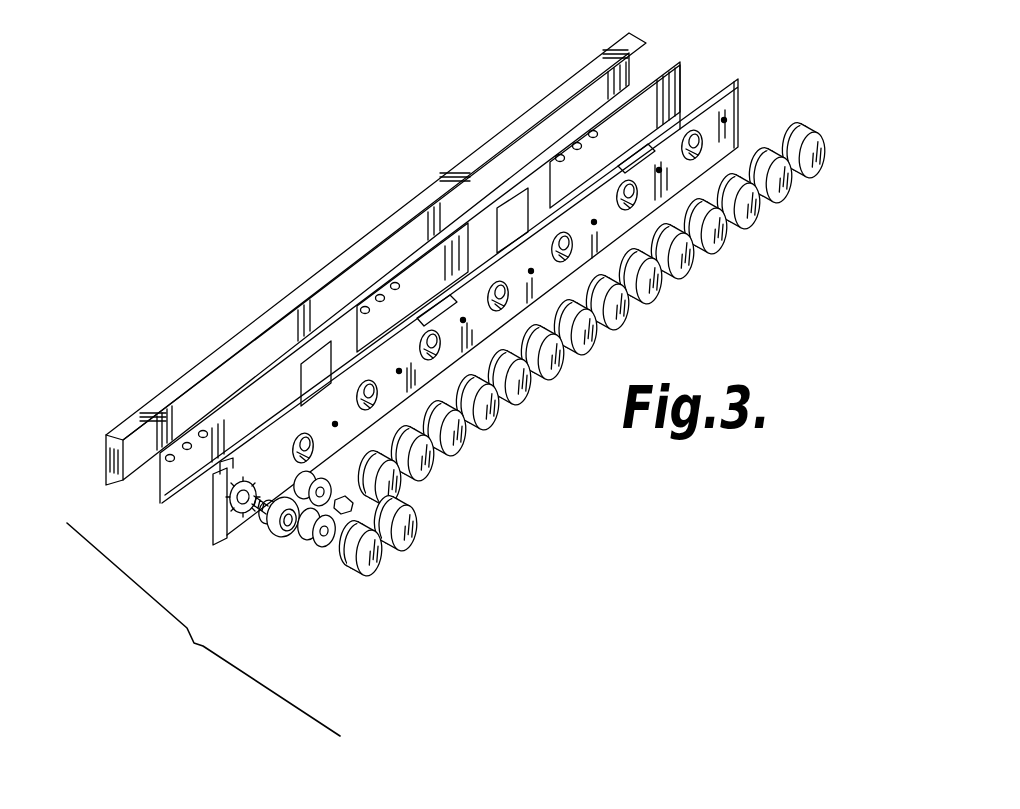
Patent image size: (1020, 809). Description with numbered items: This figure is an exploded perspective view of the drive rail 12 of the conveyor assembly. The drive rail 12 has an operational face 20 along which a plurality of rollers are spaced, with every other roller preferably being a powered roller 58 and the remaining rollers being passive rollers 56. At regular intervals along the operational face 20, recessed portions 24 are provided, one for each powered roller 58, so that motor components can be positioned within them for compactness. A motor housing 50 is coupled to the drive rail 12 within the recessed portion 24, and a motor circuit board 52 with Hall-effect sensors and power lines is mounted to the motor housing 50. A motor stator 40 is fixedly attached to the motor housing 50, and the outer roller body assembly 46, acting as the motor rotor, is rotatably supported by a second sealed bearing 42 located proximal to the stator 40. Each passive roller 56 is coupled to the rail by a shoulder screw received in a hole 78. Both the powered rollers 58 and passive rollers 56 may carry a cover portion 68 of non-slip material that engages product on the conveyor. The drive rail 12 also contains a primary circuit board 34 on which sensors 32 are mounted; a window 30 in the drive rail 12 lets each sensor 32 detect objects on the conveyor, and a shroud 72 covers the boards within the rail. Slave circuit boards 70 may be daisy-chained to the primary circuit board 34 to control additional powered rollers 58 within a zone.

The drive rail 12 is at (731, 79).
The operational face 20 is at (740, 117).
The recessed portion 24 is at (691, 127).
The window 30 is at (187, 443).
The sensor 32 is at (170, 458).
The circuit board 34 is at (272, 398).
The motor stator 40 is at (288, 537).
The second sealed bearing 42 is at (262, 528).
The outer roller body assembly 46 is at (322, 545).
The motor housing 50 is at (250, 520).
The motor circuit board 52 is at (277, 540).
The passive roller 56 is at (456, 539).
The powered roller 58 is at (410, 581).
The cover portion 68 is at (383, 557).
The slave circuit board 70 is at (508, 200).
The shroud 72 is at (380, 233).
The hole 78 is at (400, 373).